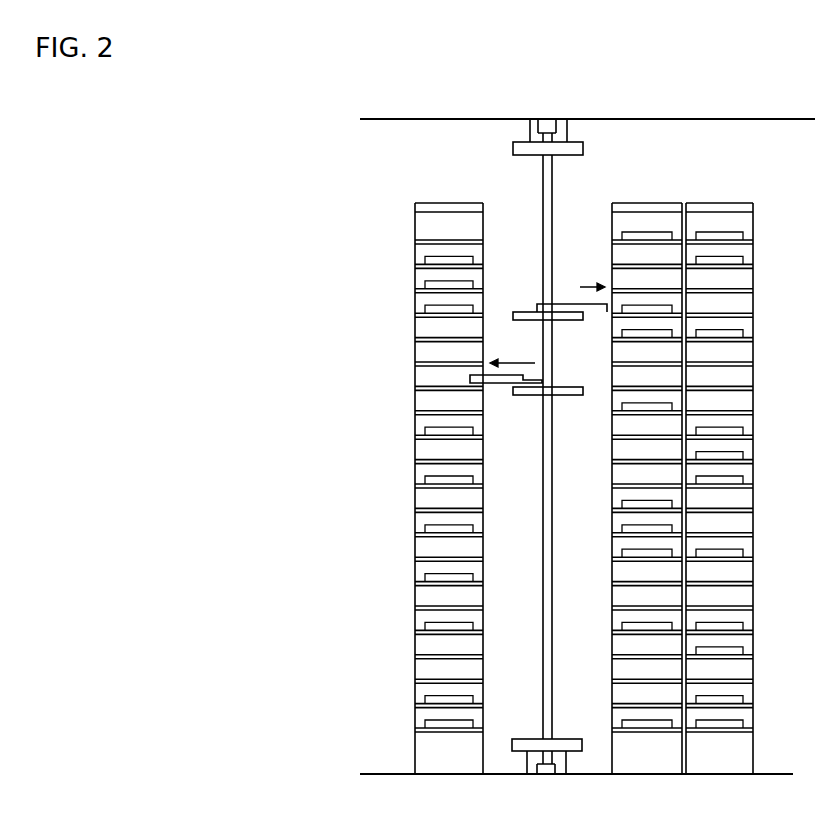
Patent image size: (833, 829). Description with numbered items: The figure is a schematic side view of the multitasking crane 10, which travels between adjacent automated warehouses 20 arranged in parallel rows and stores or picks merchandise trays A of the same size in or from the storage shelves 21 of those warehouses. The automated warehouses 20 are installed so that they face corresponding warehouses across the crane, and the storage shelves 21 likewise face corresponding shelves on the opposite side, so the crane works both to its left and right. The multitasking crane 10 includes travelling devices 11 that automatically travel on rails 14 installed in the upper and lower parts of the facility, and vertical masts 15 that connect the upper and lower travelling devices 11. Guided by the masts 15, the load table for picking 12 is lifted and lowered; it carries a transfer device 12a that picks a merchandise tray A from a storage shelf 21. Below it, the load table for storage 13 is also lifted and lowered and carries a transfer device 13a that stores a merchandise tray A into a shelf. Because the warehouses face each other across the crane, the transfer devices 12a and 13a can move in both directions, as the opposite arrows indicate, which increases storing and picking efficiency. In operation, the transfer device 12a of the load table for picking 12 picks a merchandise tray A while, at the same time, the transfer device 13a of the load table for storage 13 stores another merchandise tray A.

The multitasking crane 10 is at (550, 448).
The travelling devices 11 is at (578, 147).
The load table for picking 12 is at (532, 312).
The transfer device 12a is at (597, 320).
The load table for storage 13 is at (567, 395).
The transfer device 13a is at (497, 384).
The rails 14 is at (548, 124).
The masts 15 is at (543, 567).
The automated warehouses 20 is at (436, 198).
The storage shelves 21 is at (430, 229).
The merchandise trays A is at (437, 283).